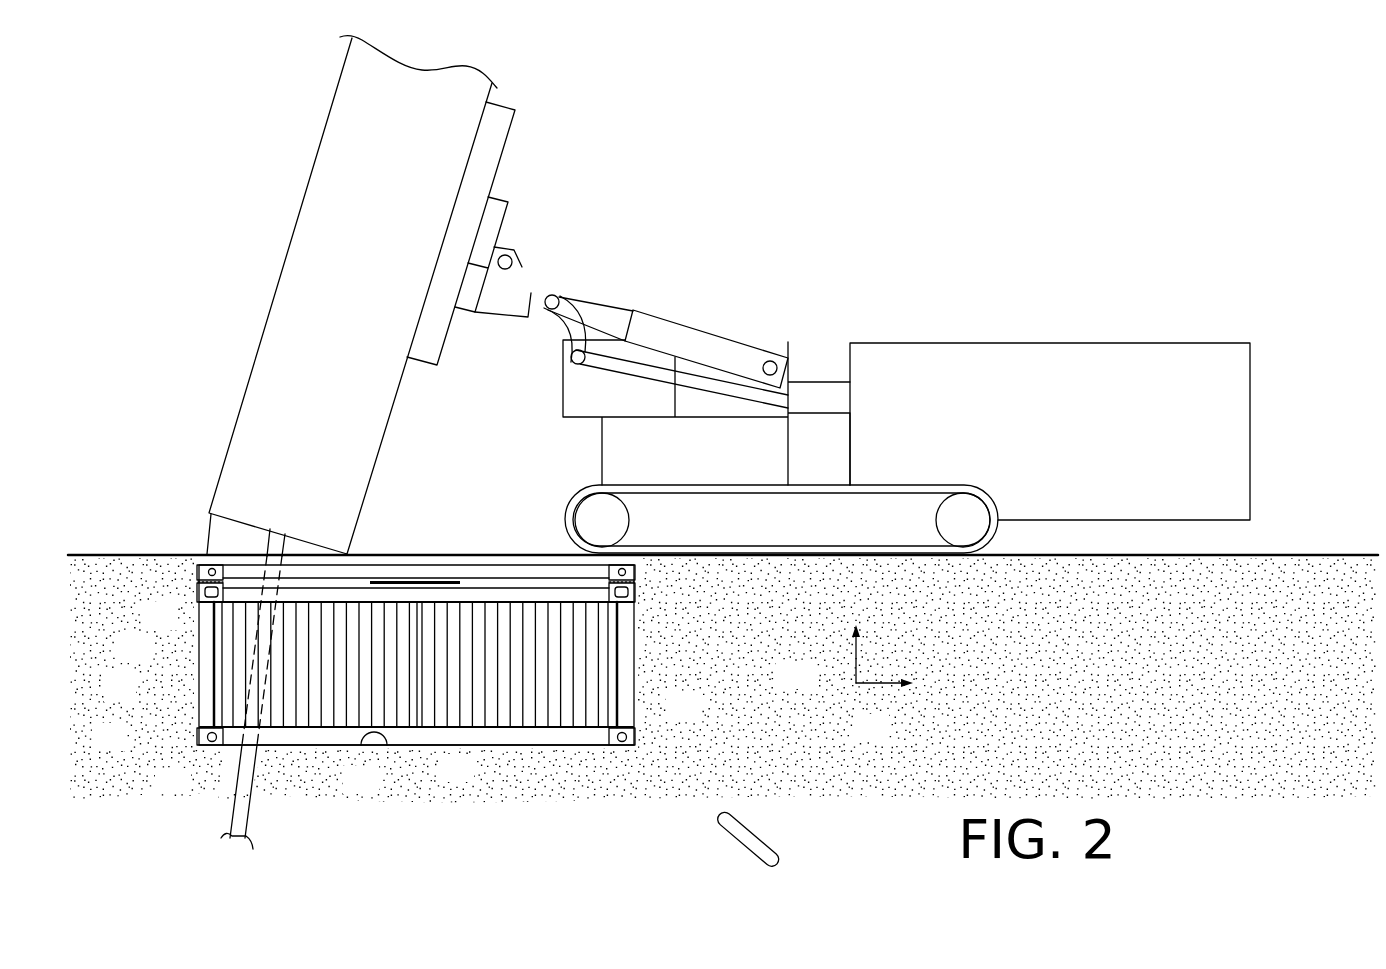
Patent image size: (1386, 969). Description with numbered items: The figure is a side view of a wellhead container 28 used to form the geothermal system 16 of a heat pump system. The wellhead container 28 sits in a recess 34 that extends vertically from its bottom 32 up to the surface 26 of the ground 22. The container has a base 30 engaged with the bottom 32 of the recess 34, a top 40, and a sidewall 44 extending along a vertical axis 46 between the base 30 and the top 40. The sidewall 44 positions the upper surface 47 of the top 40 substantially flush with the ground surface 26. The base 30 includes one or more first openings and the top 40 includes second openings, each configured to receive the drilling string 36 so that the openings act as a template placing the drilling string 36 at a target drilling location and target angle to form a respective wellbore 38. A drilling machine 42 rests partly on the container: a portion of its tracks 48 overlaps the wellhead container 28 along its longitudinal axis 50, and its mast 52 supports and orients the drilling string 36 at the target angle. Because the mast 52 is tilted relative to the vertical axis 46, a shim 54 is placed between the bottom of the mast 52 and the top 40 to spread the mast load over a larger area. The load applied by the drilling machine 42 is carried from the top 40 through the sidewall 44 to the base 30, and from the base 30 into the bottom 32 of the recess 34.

The geothermal system 16 is at (230, 792).
The ground 22 is at (106, 697).
The surface 26 is at (173, 553).
The wellhead container 28 is at (197, 662).
The base 30 is at (405, 745).
The bottom 32 is at (379, 748).
The recess 34 is at (176, 712).
The drilling string 36 is at (262, 592).
The wellbore 38 is at (247, 823).
The top 40 is at (460, 553).
The drilling machine 42 is at (975, 313).
The sidewall 44 is at (573, 653).
The vertical axis 46 is at (853, 662).
The upper surface 47 is at (412, 553).
The tracks 48 is at (883, 485).
The longitudinal axis 50 is at (858, 684).
The mast 52 is at (298, 342).
The shim 54 is at (206, 530).